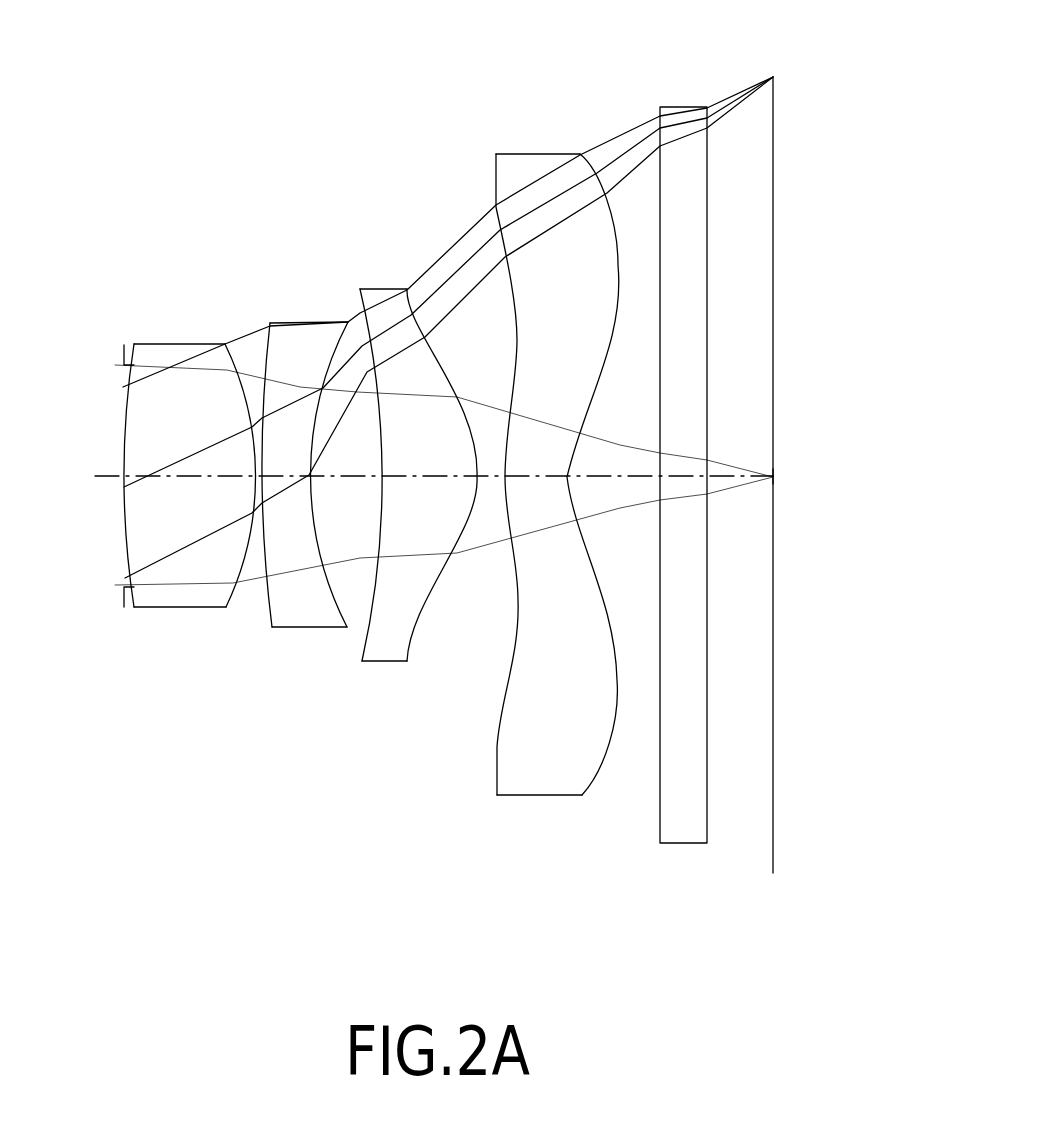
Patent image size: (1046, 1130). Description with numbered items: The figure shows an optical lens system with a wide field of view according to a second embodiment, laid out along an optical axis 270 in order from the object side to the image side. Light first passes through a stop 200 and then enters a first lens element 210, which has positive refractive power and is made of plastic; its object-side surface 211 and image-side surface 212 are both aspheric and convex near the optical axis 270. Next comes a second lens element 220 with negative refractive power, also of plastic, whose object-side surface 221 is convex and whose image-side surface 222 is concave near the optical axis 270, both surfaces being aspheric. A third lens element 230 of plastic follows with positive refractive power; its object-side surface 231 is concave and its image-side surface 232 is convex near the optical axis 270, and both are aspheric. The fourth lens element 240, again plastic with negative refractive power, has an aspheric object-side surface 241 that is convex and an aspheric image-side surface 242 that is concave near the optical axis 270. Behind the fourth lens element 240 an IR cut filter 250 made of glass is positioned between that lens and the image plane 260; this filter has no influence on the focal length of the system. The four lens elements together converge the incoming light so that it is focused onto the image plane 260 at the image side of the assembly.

The stop 200 is at (119, 346).
The first lens element 210 is at (165, 454).
The object-side surface 211 is at (133, 562).
The image-side surface 212 is at (247, 568).
The second lens element 220 is at (300, 467).
The object-side surface 221 is at (266, 588).
The image-side surface 222 is at (331, 592).
The third lens element 230 is at (409, 454).
The object-side surface 231 is at (368, 603).
The image-side surface 232 is at (421, 617).
The fourth lens element 240 is at (529, 456).
The object-side surface 241 is at (510, 682).
The image-side surface 242 is at (611, 749).
The IR cut filter 250 is at (685, 104).
The image plane 260 is at (771, 828).
The optical axis 270 is at (743, 475).